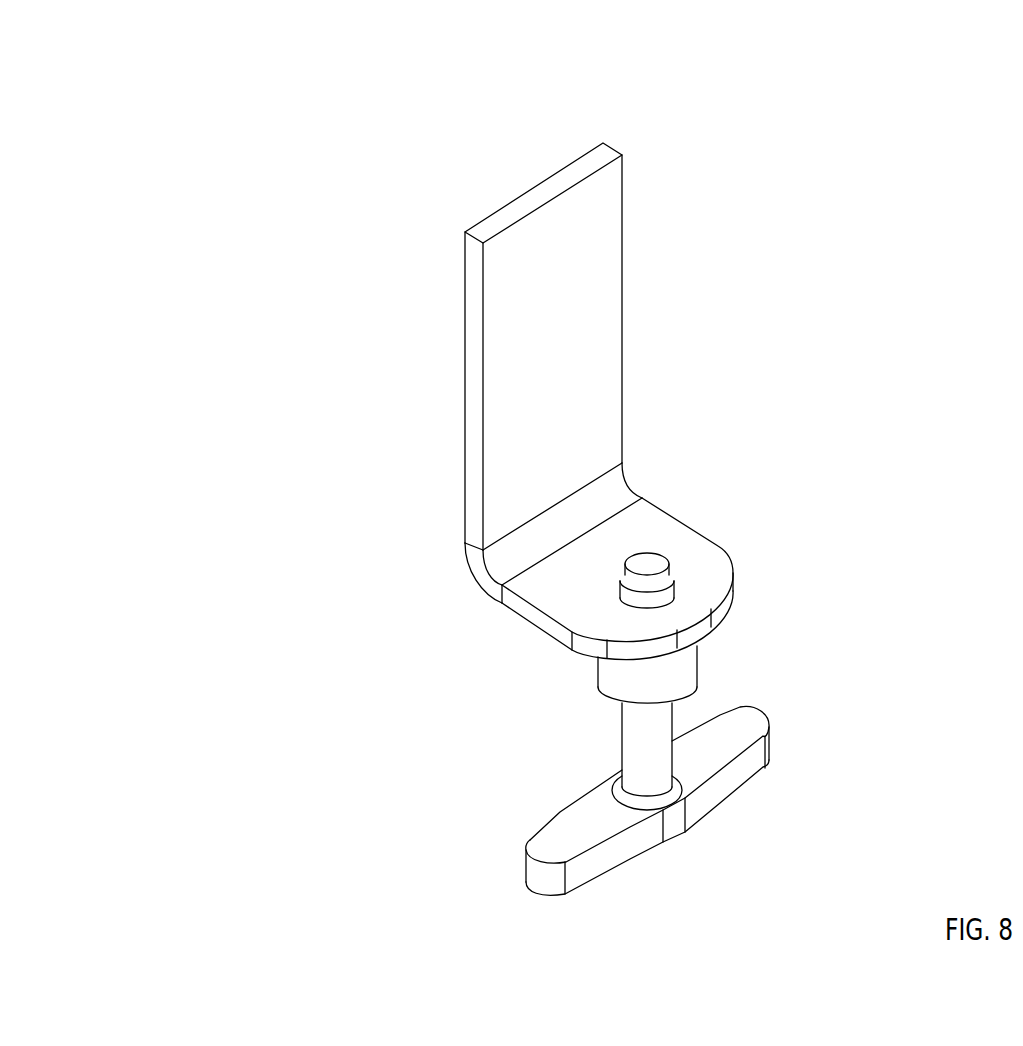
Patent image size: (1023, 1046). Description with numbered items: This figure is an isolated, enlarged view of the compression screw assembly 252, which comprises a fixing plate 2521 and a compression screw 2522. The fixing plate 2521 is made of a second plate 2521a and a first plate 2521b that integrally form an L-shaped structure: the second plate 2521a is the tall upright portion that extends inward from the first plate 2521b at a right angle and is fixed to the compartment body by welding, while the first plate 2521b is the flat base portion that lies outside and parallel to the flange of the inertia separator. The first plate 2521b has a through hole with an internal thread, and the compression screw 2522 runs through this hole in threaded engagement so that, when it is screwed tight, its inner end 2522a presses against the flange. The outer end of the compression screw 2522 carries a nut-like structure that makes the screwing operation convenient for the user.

The compression screw assembly 252 is at (438, 145).
The fixing plate 2521 is at (240, 468).
The second plate 2521a is at (465, 425).
The first plate 2521b is at (497, 613).
The compression screw 2522 is at (602, 860).
The inner end of the compression screw 2522a is at (645, 568).